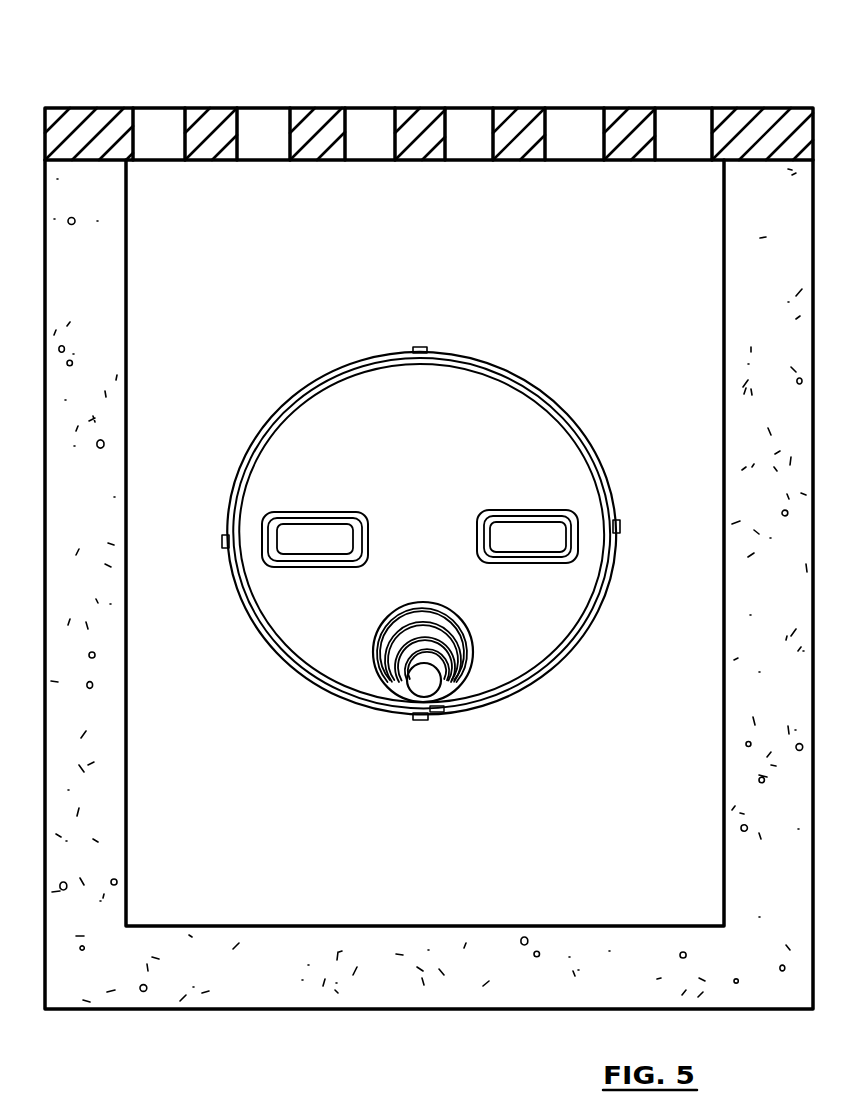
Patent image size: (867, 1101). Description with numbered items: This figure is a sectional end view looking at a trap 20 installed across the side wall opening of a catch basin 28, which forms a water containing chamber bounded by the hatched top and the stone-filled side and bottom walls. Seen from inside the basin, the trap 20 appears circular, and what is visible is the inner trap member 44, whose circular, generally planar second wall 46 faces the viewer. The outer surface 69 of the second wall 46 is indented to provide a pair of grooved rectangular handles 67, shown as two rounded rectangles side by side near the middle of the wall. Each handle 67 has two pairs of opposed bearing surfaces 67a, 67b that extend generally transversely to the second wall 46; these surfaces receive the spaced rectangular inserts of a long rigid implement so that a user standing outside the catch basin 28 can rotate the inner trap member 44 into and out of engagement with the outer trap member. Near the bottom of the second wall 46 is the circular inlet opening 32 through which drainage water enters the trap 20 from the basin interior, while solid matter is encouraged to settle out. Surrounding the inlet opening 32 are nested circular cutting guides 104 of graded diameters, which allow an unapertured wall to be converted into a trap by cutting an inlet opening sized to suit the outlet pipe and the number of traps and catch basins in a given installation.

The trap 20 is at (420, 577).
The catch basin 28 is at (541, 83).
The inlet opening 32 is at (405, 643).
The inner trap member 44 is at (508, 404).
The second wall 46 is at (315, 420).
The grooved rectangular handle 67 is at (420, 538).
The bearing surface 67a is at (290, 522).
The bearing surface 67b is at (275, 535).
The outer surface 69 is at (433, 438).
The circular cutting guide 104 is at (463, 650).